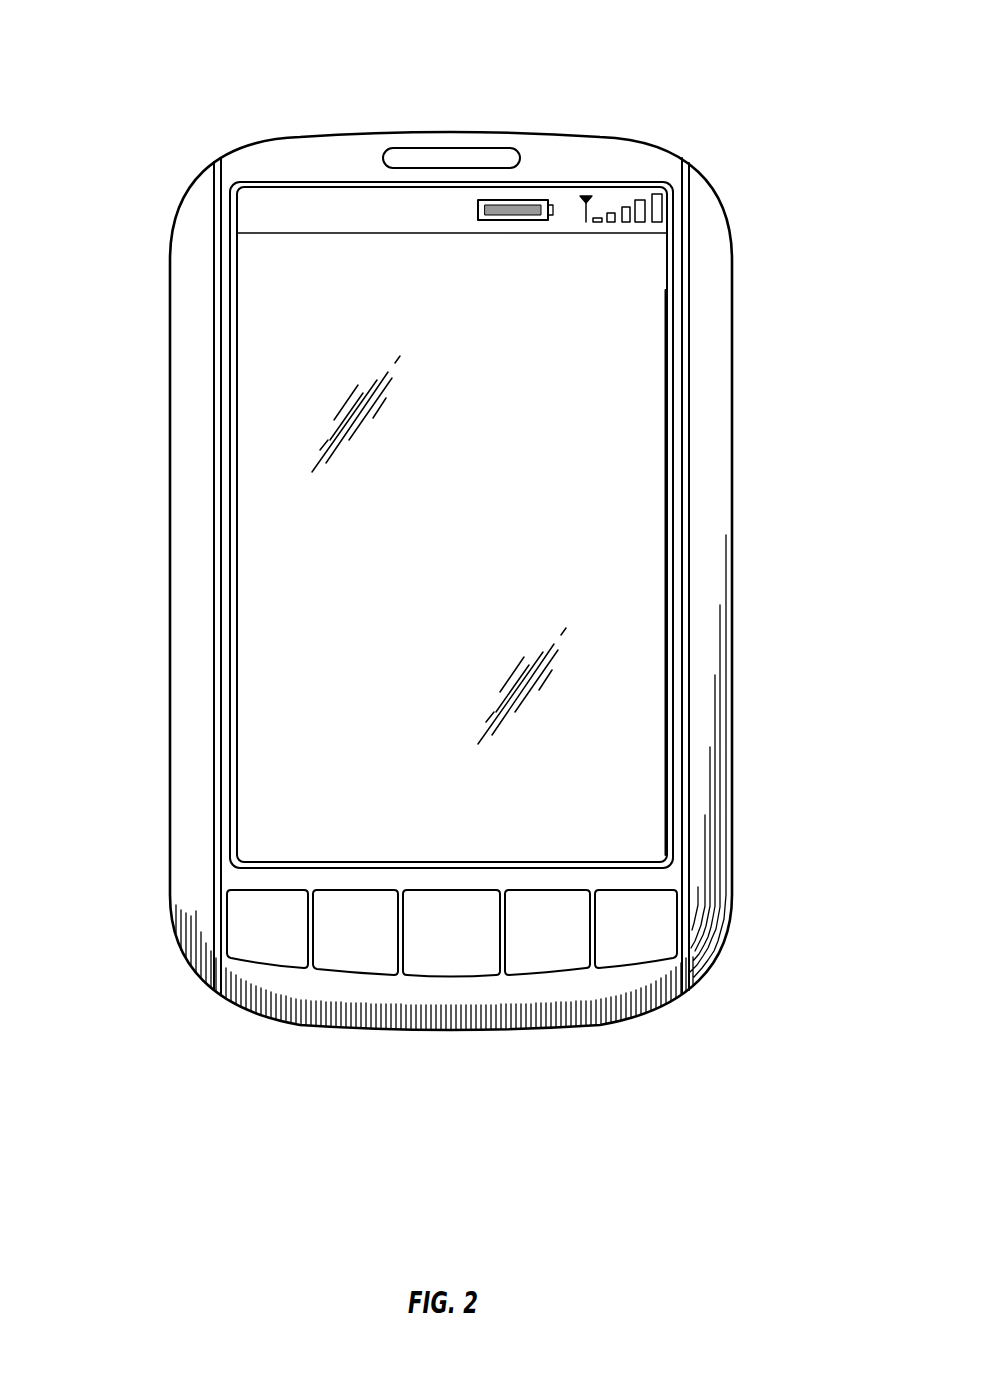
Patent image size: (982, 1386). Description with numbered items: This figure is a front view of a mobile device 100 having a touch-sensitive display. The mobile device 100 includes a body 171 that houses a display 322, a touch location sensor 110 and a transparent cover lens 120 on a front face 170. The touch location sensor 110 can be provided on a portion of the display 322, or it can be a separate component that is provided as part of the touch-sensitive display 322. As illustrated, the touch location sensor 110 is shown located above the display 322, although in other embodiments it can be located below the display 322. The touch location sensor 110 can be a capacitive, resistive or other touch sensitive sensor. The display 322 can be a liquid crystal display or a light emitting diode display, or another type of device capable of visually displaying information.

The mobile device 100 is at (496, 52).
The touch location sensor 110 is at (645, 802).
The transparent cover lens 120 is at (282, 687).
The front face 170 is at (708, 230).
The body 171 is at (170, 252).
The display 322 is at (283, 432).